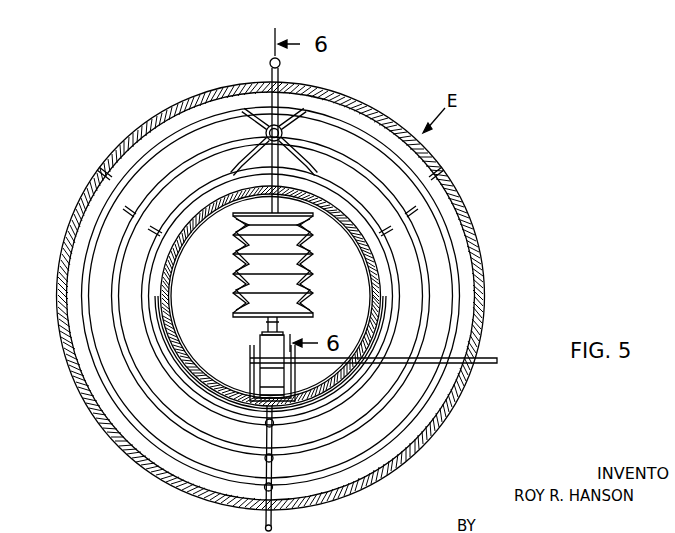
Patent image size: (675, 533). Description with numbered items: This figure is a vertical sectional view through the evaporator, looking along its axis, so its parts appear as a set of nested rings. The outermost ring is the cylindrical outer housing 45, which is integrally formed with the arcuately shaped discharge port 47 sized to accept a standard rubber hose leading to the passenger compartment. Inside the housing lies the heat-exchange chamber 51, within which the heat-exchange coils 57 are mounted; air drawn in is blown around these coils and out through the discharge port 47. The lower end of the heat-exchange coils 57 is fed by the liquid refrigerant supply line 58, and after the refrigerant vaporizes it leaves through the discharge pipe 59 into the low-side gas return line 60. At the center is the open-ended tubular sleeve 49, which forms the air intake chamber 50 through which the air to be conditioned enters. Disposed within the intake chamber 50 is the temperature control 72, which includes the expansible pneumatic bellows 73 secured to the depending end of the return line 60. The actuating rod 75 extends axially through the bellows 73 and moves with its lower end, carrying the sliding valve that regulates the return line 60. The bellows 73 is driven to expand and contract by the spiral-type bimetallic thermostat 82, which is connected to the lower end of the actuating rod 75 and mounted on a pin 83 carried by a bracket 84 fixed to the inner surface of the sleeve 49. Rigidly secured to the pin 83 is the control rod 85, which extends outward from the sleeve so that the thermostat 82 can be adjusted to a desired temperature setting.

The cylindrical outer housing 45 is at (485, 294).
The discharge port 47 is at (149, 134).
The tubular sleeve 49 is at (178, 318).
The air intake chamber 50 is at (203, 333).
The heat-exchange chamber 51 is at (440, 258).
The heat-exchange coils 57 is at (440, 423).
The liquid refrigerant supply line 58 is at (265, 528).
The discharge pipe 59 is at (268, 127).
The low-side gas return line 60 is at (282, 65).
The temperature control 72 is at (311, 288).
The expansible pneumatic bellows 73 is at (313, 254).
The actuating rod 75 is at (281, 330).
The spiral-type bimetallic thermostat 82 is at (263, 382).
The pin 83 is at (250, 355).
The bracket 84 is at (300, 382).
The control rod 85 is at (497, 360).